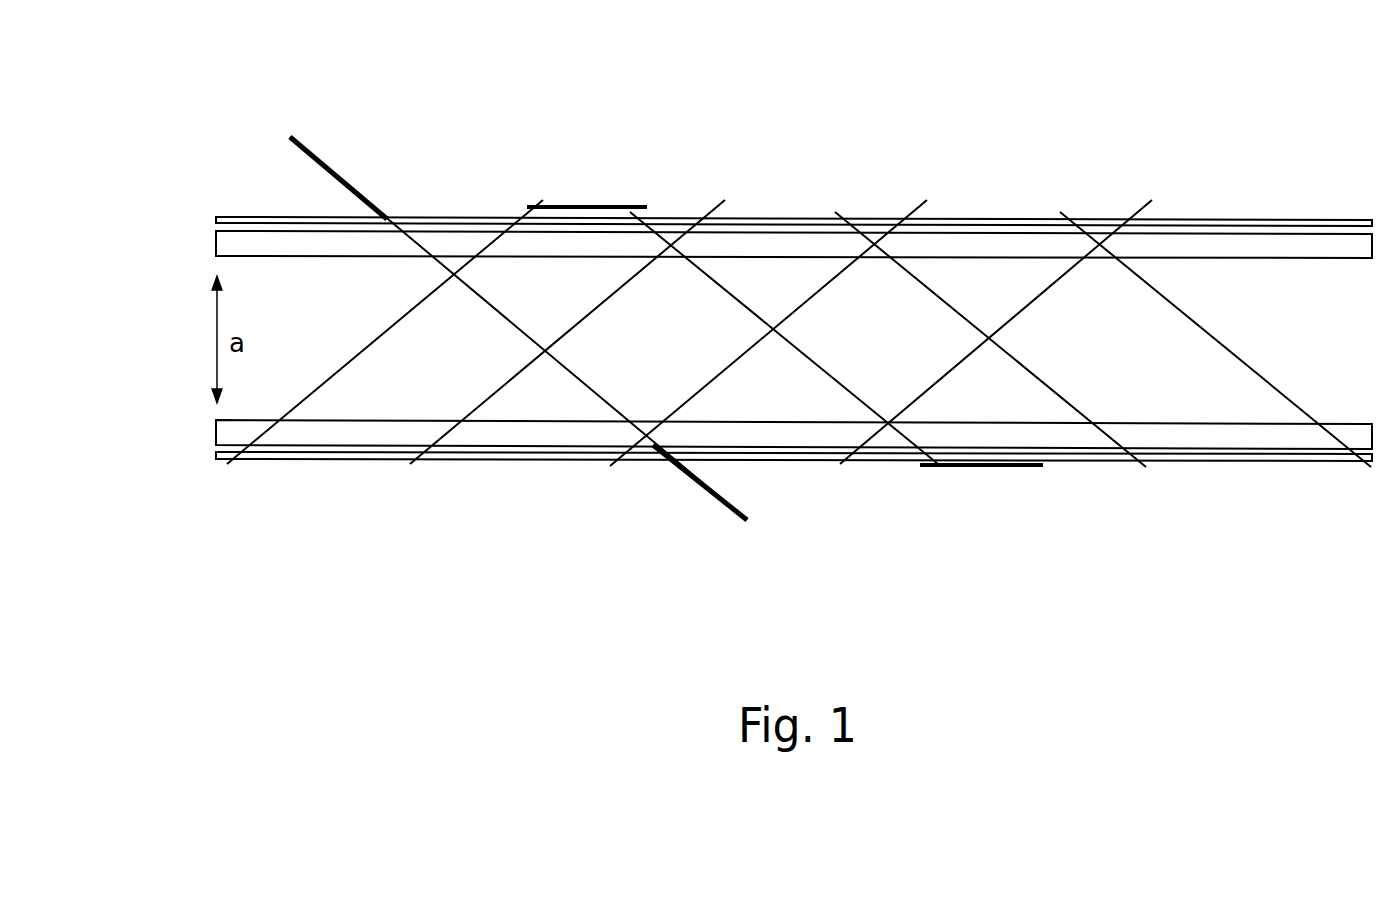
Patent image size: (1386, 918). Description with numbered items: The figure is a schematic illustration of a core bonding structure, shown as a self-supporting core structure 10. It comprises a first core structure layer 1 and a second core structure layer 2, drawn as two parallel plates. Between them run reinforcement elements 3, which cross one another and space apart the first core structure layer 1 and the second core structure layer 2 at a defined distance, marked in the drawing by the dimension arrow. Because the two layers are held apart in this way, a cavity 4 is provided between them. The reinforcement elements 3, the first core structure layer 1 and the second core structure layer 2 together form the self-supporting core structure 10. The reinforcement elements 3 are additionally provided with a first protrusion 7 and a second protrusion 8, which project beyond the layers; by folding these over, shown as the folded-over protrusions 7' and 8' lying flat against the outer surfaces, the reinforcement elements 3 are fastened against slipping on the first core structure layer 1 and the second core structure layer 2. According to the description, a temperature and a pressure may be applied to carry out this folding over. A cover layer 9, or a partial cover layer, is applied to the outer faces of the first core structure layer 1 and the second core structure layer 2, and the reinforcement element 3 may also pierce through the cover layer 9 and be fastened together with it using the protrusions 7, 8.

The first core structure layer 1 is at (1308, 248).
The second core structure layer 2 is at (532, 438).
The reinforcement element 3 is at (1033, 300).
The cavity 4 is at (776, 307).
The first protrusion 7 is at (518, 274).
The folded-over first protrusion 7' is at (587, 142).
The second protrusion 8 is at (700, 527).
The folded-over second protrusion 8' is at (981, 528).
The cover layer 9 is at (253, 218).
The self-supporting core structure 10 is at (493, 108).